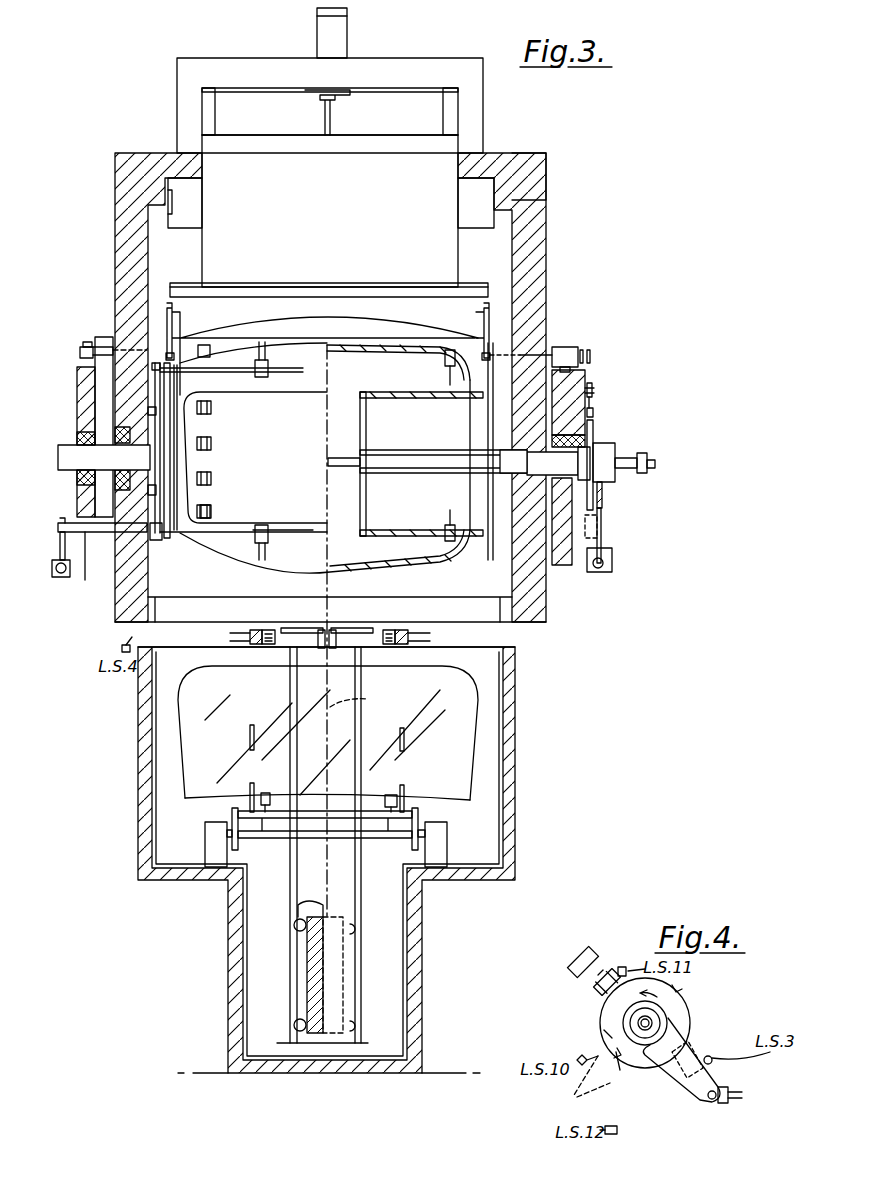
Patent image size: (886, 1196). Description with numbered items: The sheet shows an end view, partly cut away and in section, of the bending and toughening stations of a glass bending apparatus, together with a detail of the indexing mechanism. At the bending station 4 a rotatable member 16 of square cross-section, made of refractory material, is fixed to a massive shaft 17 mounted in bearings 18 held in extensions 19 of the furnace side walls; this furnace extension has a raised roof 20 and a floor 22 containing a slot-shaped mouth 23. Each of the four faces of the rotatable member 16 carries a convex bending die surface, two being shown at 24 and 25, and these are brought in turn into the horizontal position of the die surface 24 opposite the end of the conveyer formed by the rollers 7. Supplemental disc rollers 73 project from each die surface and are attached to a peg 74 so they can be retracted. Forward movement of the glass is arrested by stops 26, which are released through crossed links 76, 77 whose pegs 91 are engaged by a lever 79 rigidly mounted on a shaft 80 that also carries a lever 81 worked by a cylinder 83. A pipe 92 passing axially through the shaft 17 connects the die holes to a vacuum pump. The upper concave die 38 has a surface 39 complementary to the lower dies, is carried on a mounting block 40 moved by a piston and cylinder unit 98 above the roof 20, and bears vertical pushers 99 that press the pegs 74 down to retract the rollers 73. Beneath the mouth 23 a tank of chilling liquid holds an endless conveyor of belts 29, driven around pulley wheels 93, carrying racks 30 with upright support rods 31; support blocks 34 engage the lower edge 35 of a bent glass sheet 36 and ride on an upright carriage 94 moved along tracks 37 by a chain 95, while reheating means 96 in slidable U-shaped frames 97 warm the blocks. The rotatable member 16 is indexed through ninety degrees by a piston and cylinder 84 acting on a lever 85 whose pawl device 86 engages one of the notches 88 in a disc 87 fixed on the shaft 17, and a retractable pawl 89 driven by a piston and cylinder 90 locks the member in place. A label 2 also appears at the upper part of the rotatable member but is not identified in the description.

In FIG. 3, the drum 2 is at (330, 332).
In FIG. 3, the bending station 4 is at (495, 134).
In FIG. 3, the rollers 7 is at (160, 347).
In FIG. 3, the rotatable member 16 is at (400, 558).
In FIG. 3, the massive shaft 17 is at (446, 453).
In FIG. 3, the bearings 18 is at (128, 481).
In FIG. 3, the extensions of the side walls 19 is at (132, 240).
In FIG. 3, the roof 20 is at (526, 165).
In FIG. 3, the floor 22 is at (522, 625).
In FIG. 3, the slot-shaped mouth 23 is at (157, 620).
In FIG. 3, the die surface 24 is at (380, 352).
In FIG. 3, the die surface 25 is at (255, 461).
In FIG. 3, the stops 26 is at (266, 362).
In FIG. 3, the belts 29 is at (235, 809).
In FIG. 3, the racks 30 is at (241, 779).
In FIG. 3, the upright support rods 31 is at (248, 737).
In FIG. 3, the support blocks 34 is at (390, 794).
In FIG. 3, the lower edge 35 is at (286, 795).
In FIG. 3, the bent sheet of glass 36 is at (462, 708).
In FIG. 3, the upright tracks 37 is at (290, 955).
In FIG. 3, the upper concave die 38 is at (215, 300).
In FIG. 3, the surface 39 is at (258, 316).
In FIG. 3, the mounting block 40 is at (215, 148).
In FIG. 3, the supplemental disc rollers 73 is at (446, 356).
In FIG. 3, the peg 74 is at (520, 366).
In FIG. 3, the link 76 is at (150, 390).
In FIG. 3, the link 77 is at (176, 422).
In FIG. 3, the lever 79 is at (152, 540).
In FIG. 3, the shaft 80 is at (85, 580).
In FIG. 3, the lever 81 is at (60, 550).
In FIG. 3, the cylinder 83 is at (56, 578).
In FIG. 3, the piston and cylinder 84 is at (602, 574).
In FIG. 4, the piston and cylinder 84 is at (743, 1080).
In FIG. 3, the lever 85 is at (603, 532).
In FIG. 4, the lever 85 is at (711, 1058).
In FIG. 3, the pawl device 86 is at (590, 545).
In FIG. 4, the pawl device 86 is at (685, 1072).
In FIG. 3, the disc 87 is at (596, 432).
In FIG. 4, the disc 87 is at (610, 1035).
In FIG. 3, the peripheral notches 88 is at (604, 482).
In FIG. 4, the peripheral notches 88 is at (620, 1070).
In FIG. 3, the retractable pawl 89 is at (597, 412).
In FIG. 4, the retractable pawl 89 is at (606, 997).
In FIG. 3, the piston and cylinder 90 is at (591, 386).
In FIG. 4, the piston and cylinder 90 is at (586, 950).
In FIG. 3, the pegs 91 is at (148, 410).
In FIG. 3, the pipe 92 is at (628, 468).
In FIG. 3, the pulley wheels 93 is at (240, 834).
In FIG. 3, the upright carriage 94 is at (333, 996).
In FIG. 3, the chain 95 is at (372, 699).
In FIG. 3, the heating means 96 is at (272, 630).
In FIG. 3, the U-shaped frames 97 is at (258, 630).
In FIG. 3, the piston and cylinder unit 98 is at (320, 28).
In FIG. 3, the vertical pushers 99 is at (170, 327).